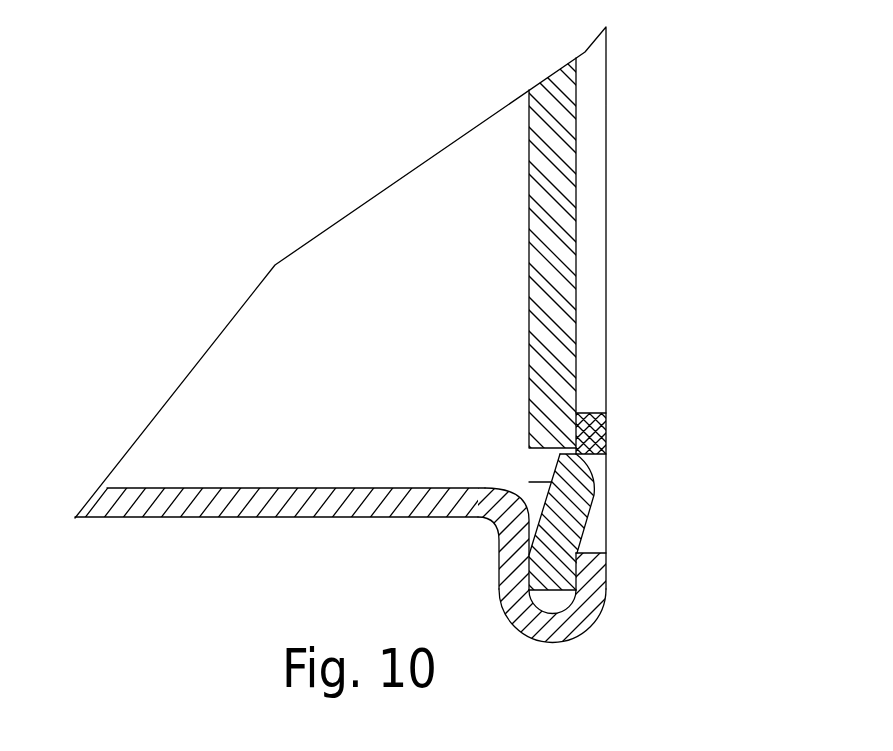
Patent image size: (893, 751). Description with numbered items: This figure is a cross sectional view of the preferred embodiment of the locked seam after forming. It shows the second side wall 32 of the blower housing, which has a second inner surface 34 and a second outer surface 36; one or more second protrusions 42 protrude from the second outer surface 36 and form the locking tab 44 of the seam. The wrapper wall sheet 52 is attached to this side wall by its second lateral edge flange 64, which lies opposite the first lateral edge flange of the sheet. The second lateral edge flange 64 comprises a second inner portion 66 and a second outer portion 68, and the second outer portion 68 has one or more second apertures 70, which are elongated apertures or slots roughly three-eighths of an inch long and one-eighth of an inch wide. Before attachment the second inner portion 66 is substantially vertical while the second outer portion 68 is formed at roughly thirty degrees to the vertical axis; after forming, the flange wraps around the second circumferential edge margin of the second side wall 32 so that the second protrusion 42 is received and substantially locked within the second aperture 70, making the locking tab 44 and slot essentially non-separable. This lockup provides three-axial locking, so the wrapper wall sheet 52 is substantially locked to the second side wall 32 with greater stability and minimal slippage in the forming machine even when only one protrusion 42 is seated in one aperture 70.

The second side wall 32 is at (408, 308).
The second outer surface 36 is at (577, 233).
The second inner surface 34 is at (529, 155).
The second protrusion 42 is at (561, 521).
The locking tab 44 is at (587, 484).
The wrapper wall sheet 52 is at (262, 517).
The second lateral edge flange 64 is at (580, 638).
The second inner portion 66 is at (518, 575).
The second outer portion 68 is at (587, 593).
The second aperture 70 is at (597, 535).